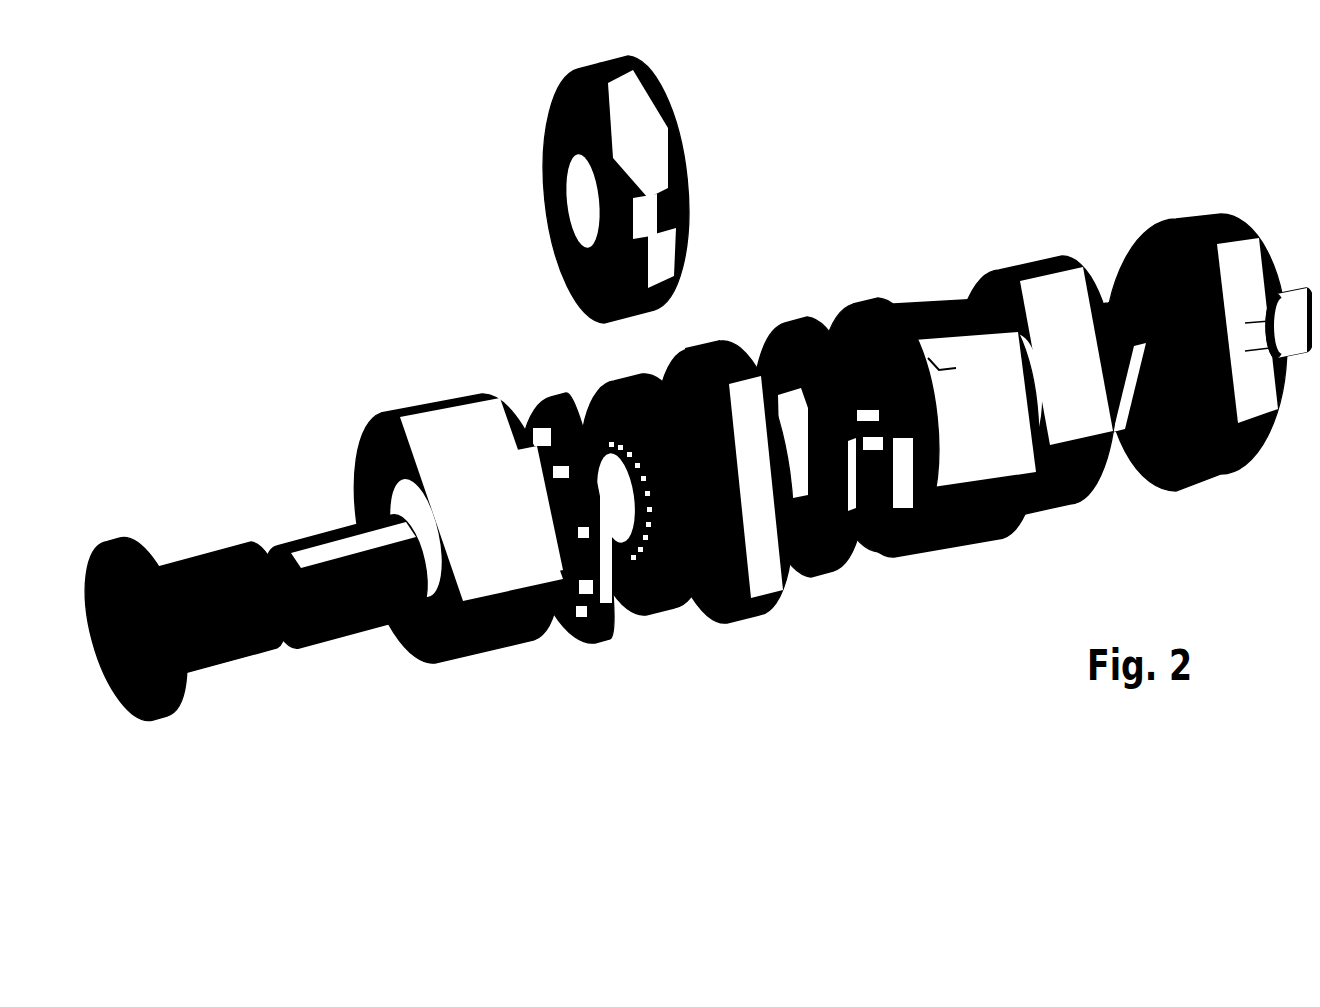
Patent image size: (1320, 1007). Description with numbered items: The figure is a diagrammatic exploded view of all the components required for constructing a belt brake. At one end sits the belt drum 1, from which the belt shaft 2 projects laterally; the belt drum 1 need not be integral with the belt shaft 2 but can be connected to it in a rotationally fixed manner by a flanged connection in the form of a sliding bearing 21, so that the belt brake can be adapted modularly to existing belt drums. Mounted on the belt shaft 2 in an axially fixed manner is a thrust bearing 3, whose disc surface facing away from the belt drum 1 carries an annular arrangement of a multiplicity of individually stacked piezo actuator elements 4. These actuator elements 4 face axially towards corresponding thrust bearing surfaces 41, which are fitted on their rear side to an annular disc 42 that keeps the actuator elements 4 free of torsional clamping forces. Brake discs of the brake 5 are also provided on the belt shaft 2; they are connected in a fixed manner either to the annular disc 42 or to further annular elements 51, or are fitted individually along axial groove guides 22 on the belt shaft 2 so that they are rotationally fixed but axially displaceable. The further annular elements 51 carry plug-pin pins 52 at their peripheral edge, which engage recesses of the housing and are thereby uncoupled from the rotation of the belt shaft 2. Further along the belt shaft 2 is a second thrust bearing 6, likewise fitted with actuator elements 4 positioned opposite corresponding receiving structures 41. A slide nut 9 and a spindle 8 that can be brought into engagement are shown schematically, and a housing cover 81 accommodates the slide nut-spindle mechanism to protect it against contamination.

The belt drum 1 is at (185, 656).
The sliding bearing 21 is at (345, 645).
The belt shaft 2 is at (458, 584).
The thrust bearing 3 is at (500, 610).
The piezo actuator elements 4 is at (729, 491).
The thrust bearing surfaces 41 is at (723, 491).
The annular disc 42 is at (644, 574).
The groove guides 22 is at (724, 558).
The brake 5 is at (653, 415).
The further annular elements 51 is at (727, 206).
The plug-pin pins 52 is at (815, 484).
The thrust bearing 6 is at (936, 348).
The slide nut 9 is at (1034, 328).
The spindle 8 is at (1114, 286).
The housing cover 81 is at (1195, 315).